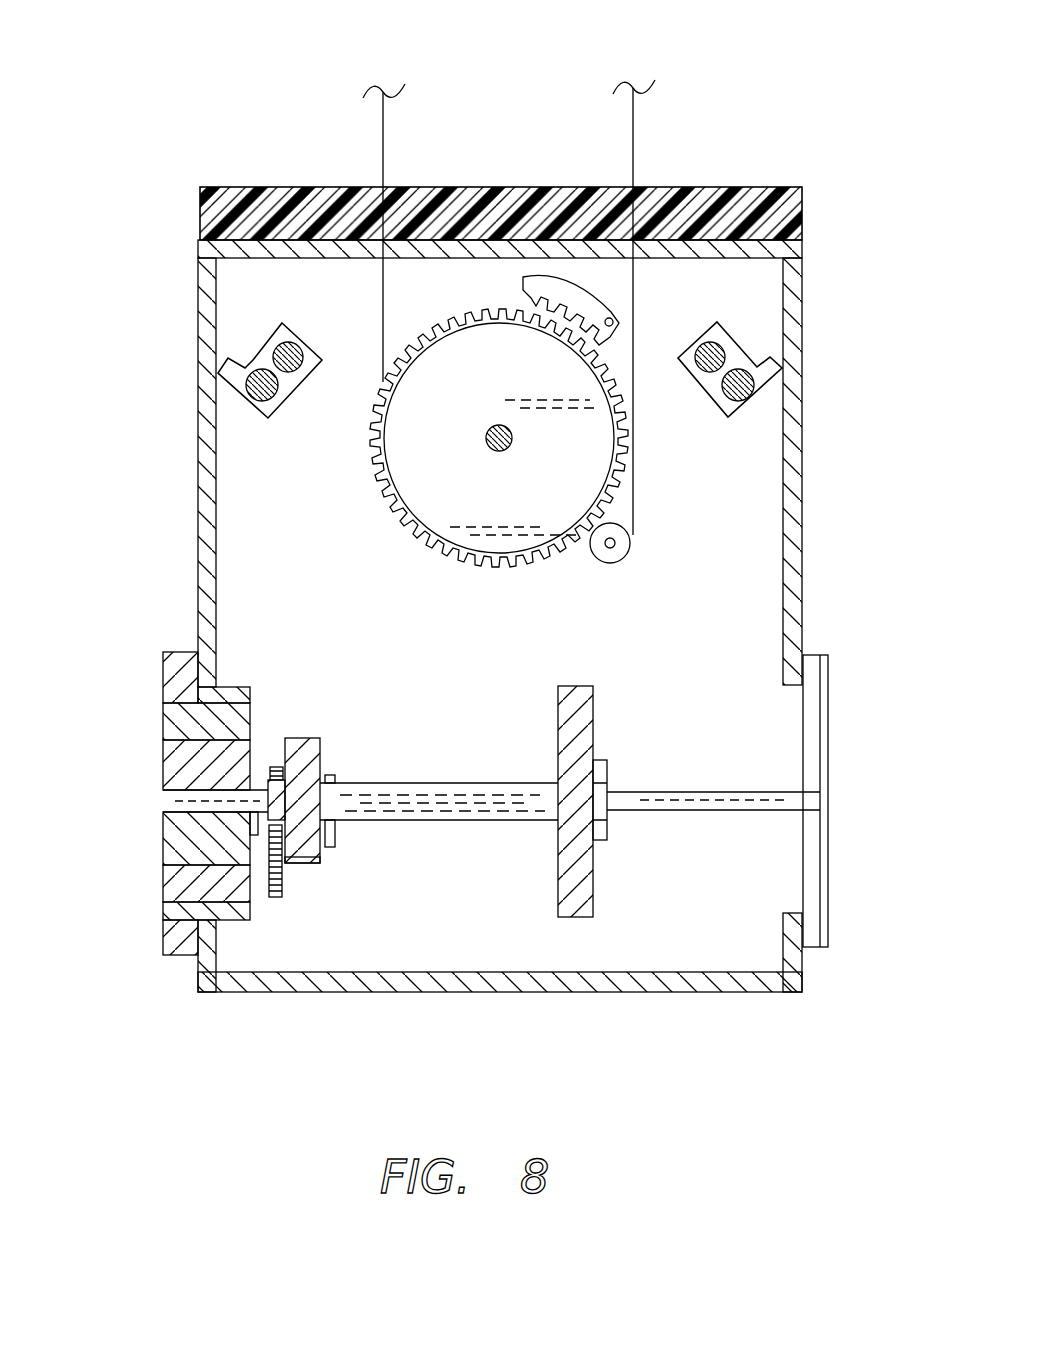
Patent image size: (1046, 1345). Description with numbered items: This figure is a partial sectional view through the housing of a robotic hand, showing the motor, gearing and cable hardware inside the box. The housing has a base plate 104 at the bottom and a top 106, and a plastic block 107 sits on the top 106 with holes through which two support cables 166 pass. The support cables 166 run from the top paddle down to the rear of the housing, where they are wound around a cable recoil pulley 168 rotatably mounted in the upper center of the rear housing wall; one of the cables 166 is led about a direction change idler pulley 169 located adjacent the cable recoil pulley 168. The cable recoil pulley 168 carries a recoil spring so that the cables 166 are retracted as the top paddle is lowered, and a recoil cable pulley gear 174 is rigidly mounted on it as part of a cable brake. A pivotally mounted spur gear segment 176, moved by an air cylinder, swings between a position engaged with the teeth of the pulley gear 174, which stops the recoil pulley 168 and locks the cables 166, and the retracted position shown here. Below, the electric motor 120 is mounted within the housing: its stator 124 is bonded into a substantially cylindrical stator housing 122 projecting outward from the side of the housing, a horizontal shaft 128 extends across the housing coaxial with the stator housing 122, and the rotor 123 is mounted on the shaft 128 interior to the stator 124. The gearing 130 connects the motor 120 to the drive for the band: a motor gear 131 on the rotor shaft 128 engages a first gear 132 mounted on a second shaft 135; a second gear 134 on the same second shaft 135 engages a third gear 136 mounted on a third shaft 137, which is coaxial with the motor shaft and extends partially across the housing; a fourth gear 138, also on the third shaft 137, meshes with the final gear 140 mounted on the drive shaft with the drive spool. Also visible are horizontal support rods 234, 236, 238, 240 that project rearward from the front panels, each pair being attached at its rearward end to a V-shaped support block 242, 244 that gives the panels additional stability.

The base plate 104 is at (484, 992).
The top 106 is at (215, 256).
The plastic block 107 is at (760, 187).
The motor 120 is at (172, 840).
The stator housing 122 is at (180, 940).
The rotor 123 is at (177, 786).
The stator 124 is at (165, 888).
The shaft 128 is at (265, 787).
The gearing 130 is at (333, 773).
The motor gear 131 is at (272, 768).
The first gear 132 is at (277, 897).
The second gear 134 is at (300, 732).
The second shaft 135 is at (260, 850).
The third gear 136 is at (303, 863).
The third shaft 137 is at (365, 821).
The fourth gear 138 is at (607, 774).
The final gear 140 is at (577, 917).
The support cables 166 is at (383, 132).
The cable recoil pulley 168 is at (570, 432).
The direction change idler pulley 169 is at (623, 563).
The recoil cable pulley gear 174 is at (430, 328).
The spur gear segment 176 is at (582, 290).
The horizontal support rod 234 is at (757, 366).
The horizontal support rod 236 is at (740, 406).
The horizontal support rod 238 is at (243, 367).
The horizontal support rod 240 is at (236, 385).
The V-shaped support block 242 is at (727, 350).
The V-shaped support block 244 is at (278, 347).